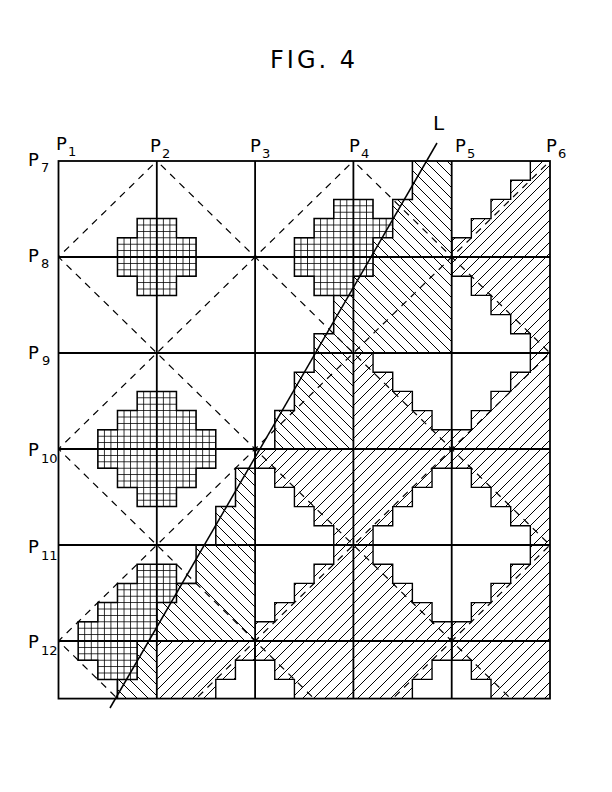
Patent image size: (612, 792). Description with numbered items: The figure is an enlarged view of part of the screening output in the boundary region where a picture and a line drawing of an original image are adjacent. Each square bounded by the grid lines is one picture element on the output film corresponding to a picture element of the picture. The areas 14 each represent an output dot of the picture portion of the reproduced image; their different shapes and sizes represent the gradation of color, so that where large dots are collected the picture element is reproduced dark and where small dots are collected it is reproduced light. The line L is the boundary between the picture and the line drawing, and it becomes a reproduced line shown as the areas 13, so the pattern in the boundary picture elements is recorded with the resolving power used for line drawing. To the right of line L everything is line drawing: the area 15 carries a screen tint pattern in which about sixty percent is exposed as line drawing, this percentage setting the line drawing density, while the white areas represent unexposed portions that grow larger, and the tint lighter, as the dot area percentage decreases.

The reproduced line areas 13 is at (349, 298).
The output dots of the picture portion 14 is at (303, 258).
The screen tint pattern area 15 is at (374, 694).